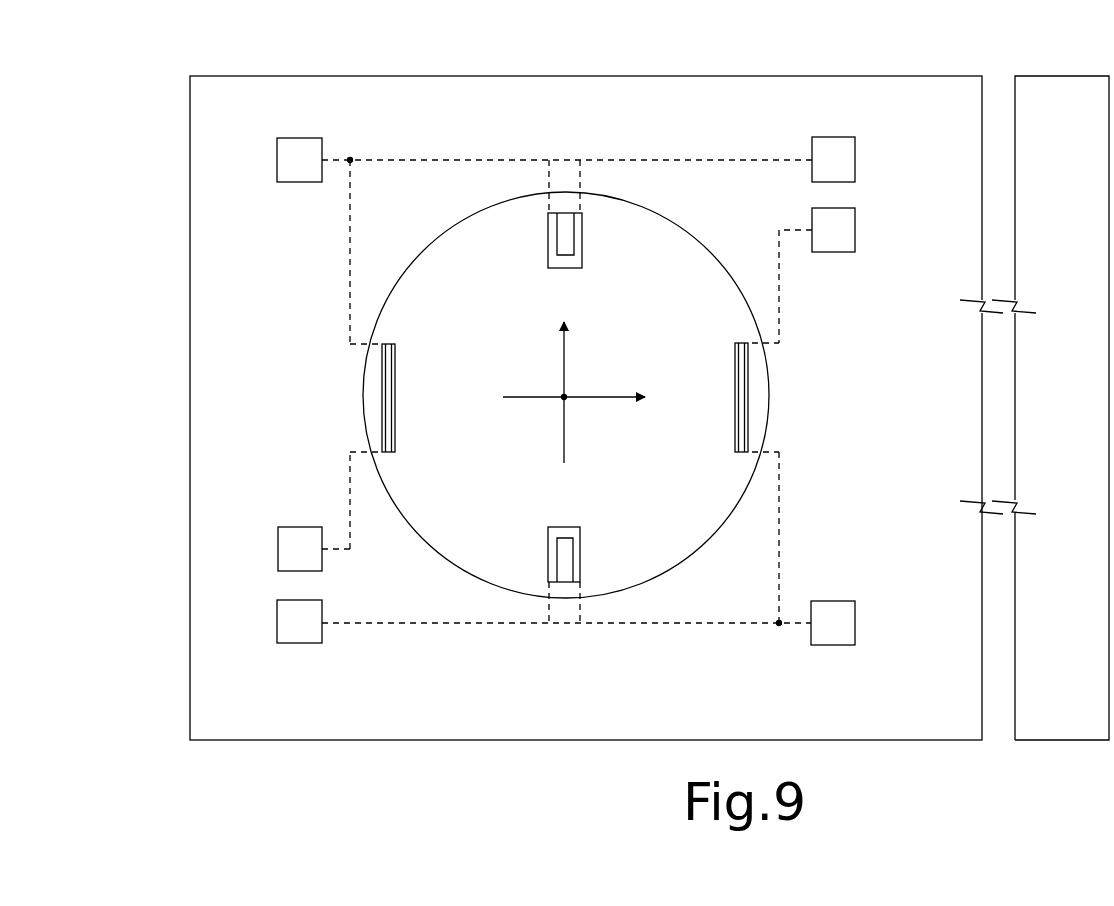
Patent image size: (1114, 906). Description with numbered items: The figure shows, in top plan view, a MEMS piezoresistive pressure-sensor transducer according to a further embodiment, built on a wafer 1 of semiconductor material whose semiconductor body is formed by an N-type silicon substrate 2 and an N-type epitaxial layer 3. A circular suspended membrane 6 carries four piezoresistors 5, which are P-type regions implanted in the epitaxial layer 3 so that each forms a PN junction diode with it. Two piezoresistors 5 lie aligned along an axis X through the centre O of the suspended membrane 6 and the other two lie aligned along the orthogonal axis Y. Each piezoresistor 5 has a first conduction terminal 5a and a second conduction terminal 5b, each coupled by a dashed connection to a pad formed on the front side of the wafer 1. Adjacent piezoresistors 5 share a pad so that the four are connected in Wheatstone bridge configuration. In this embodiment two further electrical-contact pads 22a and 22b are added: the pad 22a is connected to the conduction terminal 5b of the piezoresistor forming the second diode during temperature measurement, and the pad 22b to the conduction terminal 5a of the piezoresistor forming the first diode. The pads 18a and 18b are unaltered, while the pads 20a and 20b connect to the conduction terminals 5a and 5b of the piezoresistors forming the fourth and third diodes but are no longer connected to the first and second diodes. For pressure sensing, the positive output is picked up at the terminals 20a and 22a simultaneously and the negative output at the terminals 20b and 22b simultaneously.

The wafer 1 is at (640, 379).
The silicon substrate 2 is at (912, 75).
The epitaxial layer 3 is at (1034, 408).
The piezoresistor 5 is at (555, 243).
The first conduction terminal 5a is at (571, 210).
The second conduction terminal 5b is at (557, 210).
The suspended membrane 6 is at (690, 236).
The electrical-contact pad 18a is at (297, 180).
The electrical-contact pad 18b is at (838, 607).
The electrical-contact pad 20a is at (296, 636).
The electrical-contact pad 20b is at (850, 236).
The electrical-contact pad 22a is at (283, 537).
The electrical-contact pad 22b is at (850, 145).